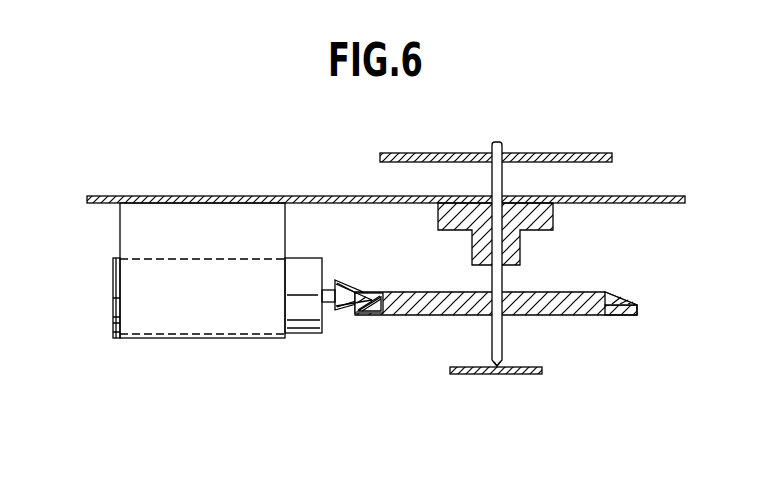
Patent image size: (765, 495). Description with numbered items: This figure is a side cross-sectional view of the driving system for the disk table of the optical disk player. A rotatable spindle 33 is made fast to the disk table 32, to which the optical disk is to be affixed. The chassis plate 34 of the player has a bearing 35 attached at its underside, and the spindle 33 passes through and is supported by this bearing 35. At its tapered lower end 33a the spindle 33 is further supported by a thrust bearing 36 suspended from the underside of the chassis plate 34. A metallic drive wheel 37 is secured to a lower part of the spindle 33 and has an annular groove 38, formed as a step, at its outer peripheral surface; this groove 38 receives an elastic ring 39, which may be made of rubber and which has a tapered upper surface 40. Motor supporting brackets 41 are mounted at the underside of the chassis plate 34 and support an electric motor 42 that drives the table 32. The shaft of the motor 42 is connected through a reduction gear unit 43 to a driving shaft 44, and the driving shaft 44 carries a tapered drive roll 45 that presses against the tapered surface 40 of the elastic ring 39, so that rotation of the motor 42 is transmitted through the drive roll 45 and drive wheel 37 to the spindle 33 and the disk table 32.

The disk table 32 is at (590, 152).
The spindle 33 is at (498, 140).
The tapered lower end 33a is at (494, 372).
The chassis plate 34 is at (188, 196).
The bearing 35 is at (547, 218).
The thrust bearing 36 is at (534, 375).
The drive wheel 37 is at (568, 308).
The annular groove 38 is at (626, 310).
The elastic ring 39 is at (372, 300).
The tapered upper surface 40 is at (377, 290).
The motor supporting brackets 41 is at (127, 223).
The electric motor 42 is at (115, 305).
The reduction gear unit 43 is at (303, 333).
The driving shaft 44 is at (331, 290).
The tapered drive roll 45 is at (348, 311).